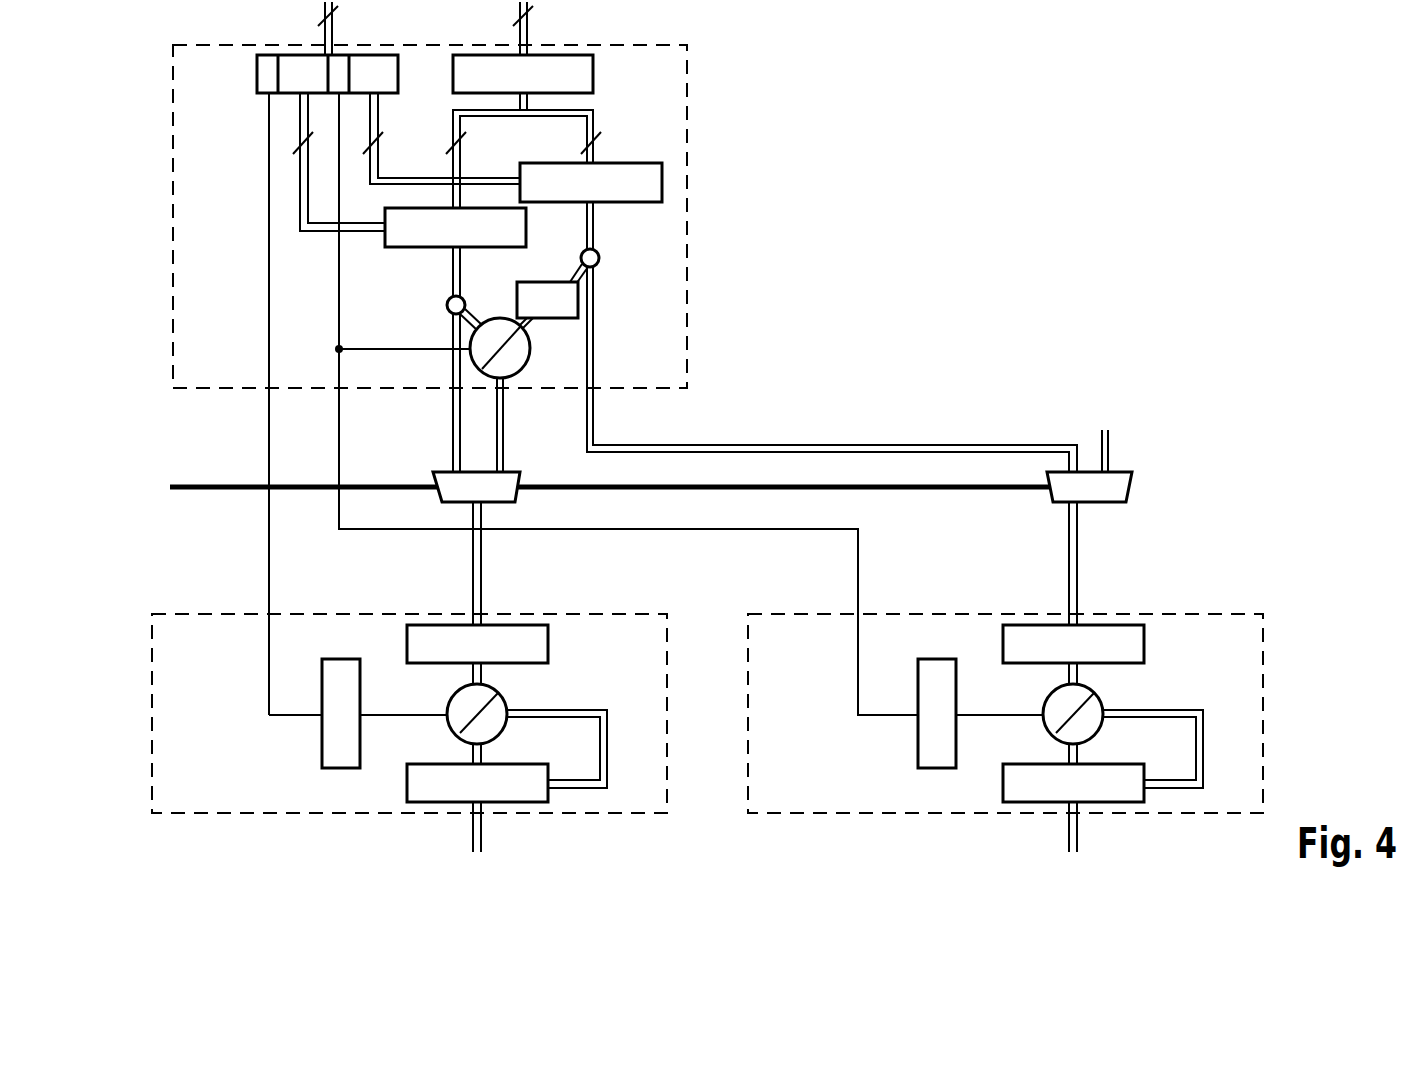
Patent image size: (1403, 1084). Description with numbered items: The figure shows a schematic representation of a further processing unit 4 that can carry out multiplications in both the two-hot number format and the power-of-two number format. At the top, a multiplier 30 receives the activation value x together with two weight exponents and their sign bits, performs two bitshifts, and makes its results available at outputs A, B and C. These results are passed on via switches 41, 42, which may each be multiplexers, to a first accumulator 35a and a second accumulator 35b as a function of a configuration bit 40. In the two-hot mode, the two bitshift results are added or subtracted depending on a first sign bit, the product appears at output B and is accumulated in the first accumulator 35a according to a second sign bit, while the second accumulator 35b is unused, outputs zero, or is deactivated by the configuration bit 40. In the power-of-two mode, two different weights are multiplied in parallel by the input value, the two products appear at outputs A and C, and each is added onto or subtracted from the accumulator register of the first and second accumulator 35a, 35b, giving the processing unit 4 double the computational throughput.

The processing unit 4 is at (707, 427).
The multiplier 30 is at (173, 80).
The first accumulator 35a is at (152, 712).
The second accumulator 35b is at (1263, 712).
The configuration bit 40 is at (300, 490).
The switch 41 is at (512, 470).
The switch 42 is at (1132, 488).